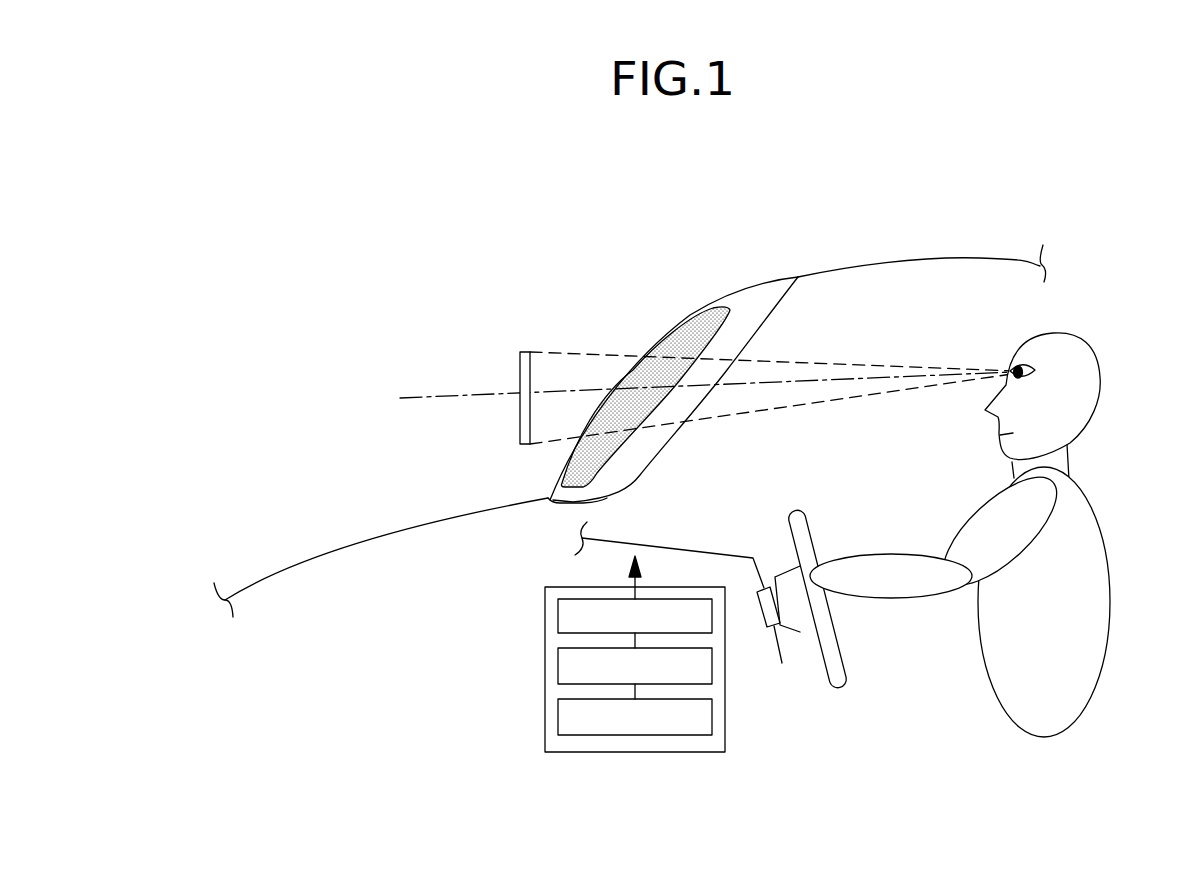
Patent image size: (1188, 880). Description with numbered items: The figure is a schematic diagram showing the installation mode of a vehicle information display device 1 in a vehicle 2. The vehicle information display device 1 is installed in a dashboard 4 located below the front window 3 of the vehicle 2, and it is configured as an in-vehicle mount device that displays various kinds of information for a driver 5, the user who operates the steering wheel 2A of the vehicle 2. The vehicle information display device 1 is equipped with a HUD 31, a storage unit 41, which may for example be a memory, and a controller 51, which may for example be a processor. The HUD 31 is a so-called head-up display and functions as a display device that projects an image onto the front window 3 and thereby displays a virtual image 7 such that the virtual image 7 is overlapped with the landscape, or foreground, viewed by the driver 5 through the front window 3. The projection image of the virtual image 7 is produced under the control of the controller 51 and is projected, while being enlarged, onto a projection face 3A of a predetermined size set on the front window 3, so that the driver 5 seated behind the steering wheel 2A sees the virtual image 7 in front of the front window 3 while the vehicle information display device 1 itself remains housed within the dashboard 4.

The vehicle information display device 1 is at (591, 700).
The vehicle 2 is at (955, 258).
The steering wheel 2A is at (812, 525).
The front window 3 is at (673, 332).
The projection face 3A is at (683, 325).
The dashboard 4 is at (686, 547).
The driver 5 is at (1100, 353).
The virtual image 7 is at (520, 372).
The HUD 31 is at (557, 616).
The storage unit 41 is at (557, 720).
The controller 51 is at (557, 670).